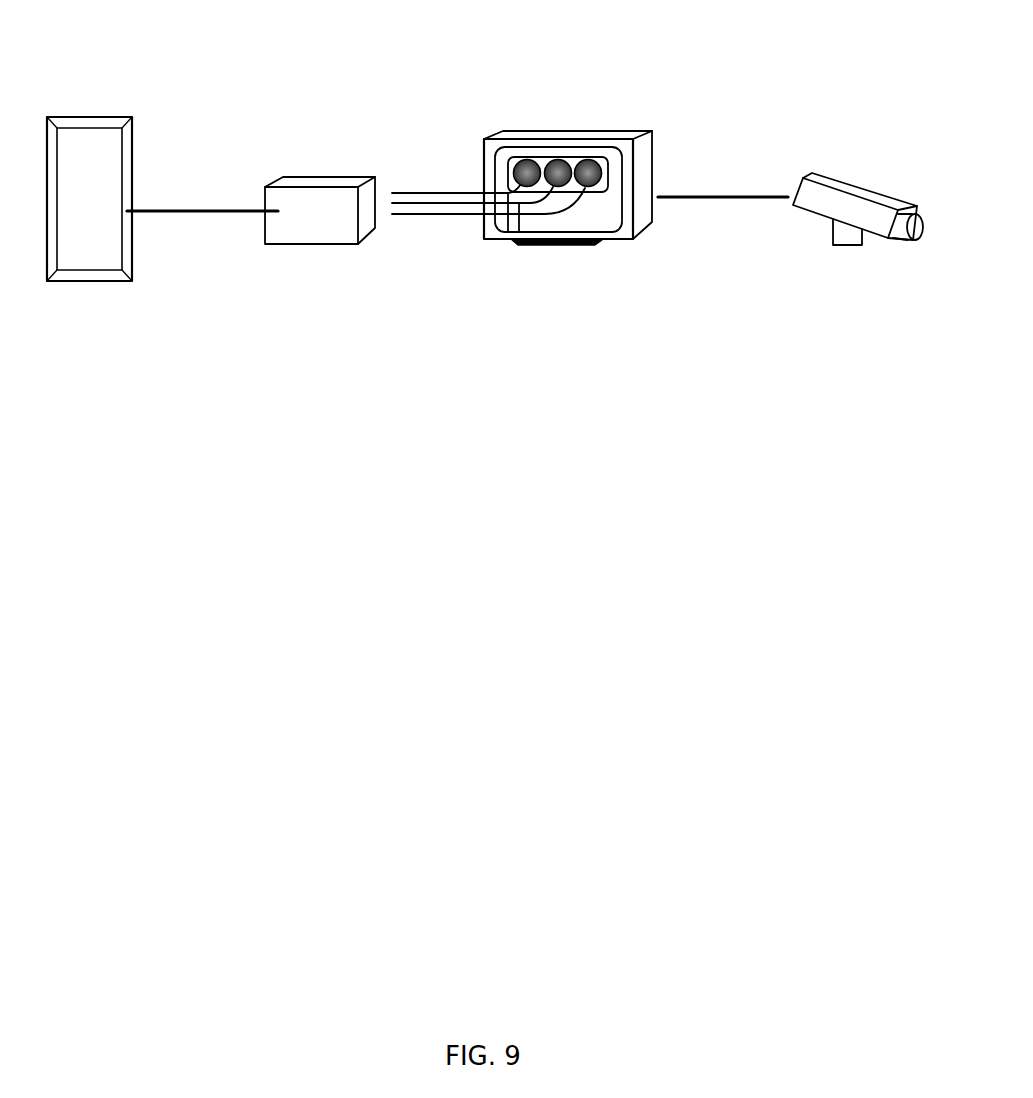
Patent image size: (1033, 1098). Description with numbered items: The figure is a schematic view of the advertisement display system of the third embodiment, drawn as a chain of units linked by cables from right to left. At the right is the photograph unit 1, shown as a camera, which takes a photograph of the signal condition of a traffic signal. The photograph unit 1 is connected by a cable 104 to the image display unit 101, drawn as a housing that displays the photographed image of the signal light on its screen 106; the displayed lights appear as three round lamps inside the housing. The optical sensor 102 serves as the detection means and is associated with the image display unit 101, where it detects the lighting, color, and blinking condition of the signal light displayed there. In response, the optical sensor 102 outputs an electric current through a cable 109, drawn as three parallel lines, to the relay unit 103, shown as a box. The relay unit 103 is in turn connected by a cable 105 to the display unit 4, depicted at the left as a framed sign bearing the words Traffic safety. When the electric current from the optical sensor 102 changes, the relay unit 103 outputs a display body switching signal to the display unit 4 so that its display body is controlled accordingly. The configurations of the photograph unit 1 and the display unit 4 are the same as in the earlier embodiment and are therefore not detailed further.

The photograph unit 1 is at (842, 197).
The display unit 4 is at (112, 119).
The image display unit 101 is at (584, 179).
The optical sensor 102 is at (525, 165).
The relay unit 103 is at (322, 234).
The cable 104 is at (728, 199).
The cable 105 is at (222, 213).
The screen 106 is at (597, 222).
The cable 109 is at (418, 192).